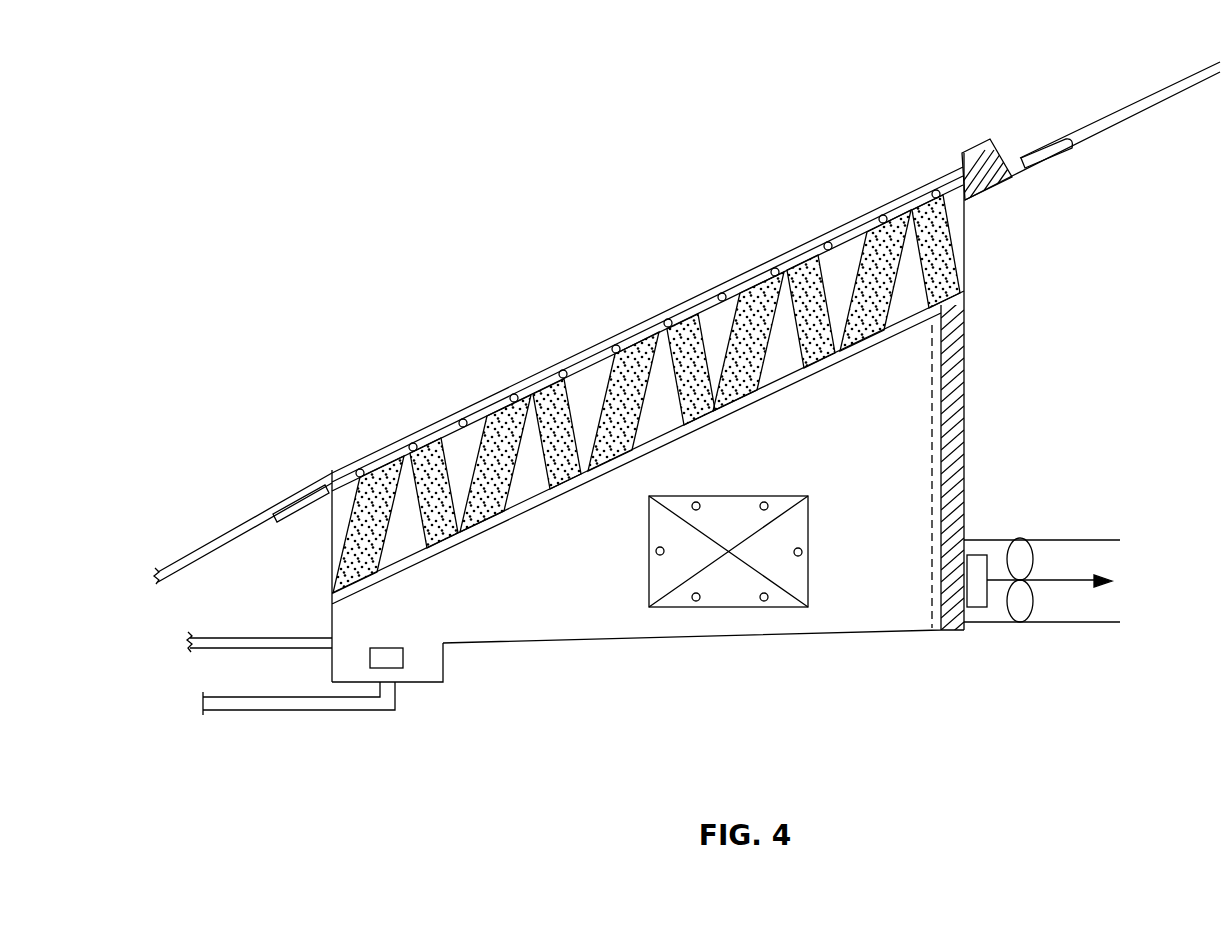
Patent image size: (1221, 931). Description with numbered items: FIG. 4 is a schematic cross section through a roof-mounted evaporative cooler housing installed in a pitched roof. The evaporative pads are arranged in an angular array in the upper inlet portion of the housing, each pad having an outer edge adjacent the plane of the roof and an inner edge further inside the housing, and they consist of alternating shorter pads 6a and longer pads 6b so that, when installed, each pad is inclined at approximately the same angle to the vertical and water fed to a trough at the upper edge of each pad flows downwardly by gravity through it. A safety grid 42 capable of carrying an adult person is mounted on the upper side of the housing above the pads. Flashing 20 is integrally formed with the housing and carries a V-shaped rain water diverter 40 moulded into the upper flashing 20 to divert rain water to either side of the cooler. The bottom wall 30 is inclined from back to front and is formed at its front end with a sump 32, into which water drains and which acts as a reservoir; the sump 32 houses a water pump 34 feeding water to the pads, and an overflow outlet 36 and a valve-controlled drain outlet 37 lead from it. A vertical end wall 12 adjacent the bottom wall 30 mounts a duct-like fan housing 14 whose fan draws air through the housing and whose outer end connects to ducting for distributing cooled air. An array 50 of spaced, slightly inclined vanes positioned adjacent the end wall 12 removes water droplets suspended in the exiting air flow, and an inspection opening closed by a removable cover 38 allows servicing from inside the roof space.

The shorter evaporative pad 6a is at (807, 298).
The longer evaporative pad 6b is at (367, 503).
The vertical end wall 12 is at (965, 350).
The fan housing 14 is at (1092, 540).
The flashing 20 is at (293, 497).
The bottom wall 30 is at (700, 637).
The sump 32 is at (443, 673).
The water pump 34 is at (392, 660).
The overflow outlet 36 is at (260, 638).
The valve-controlled drain outlet 37 is at (348, 710).
The cover 38 is at (785, 594).
The rain water diverter 40 is at (981, 163).
The safety grid 42 is at (470, 405).
The array of spaced vanes 50 is at (948, 455).